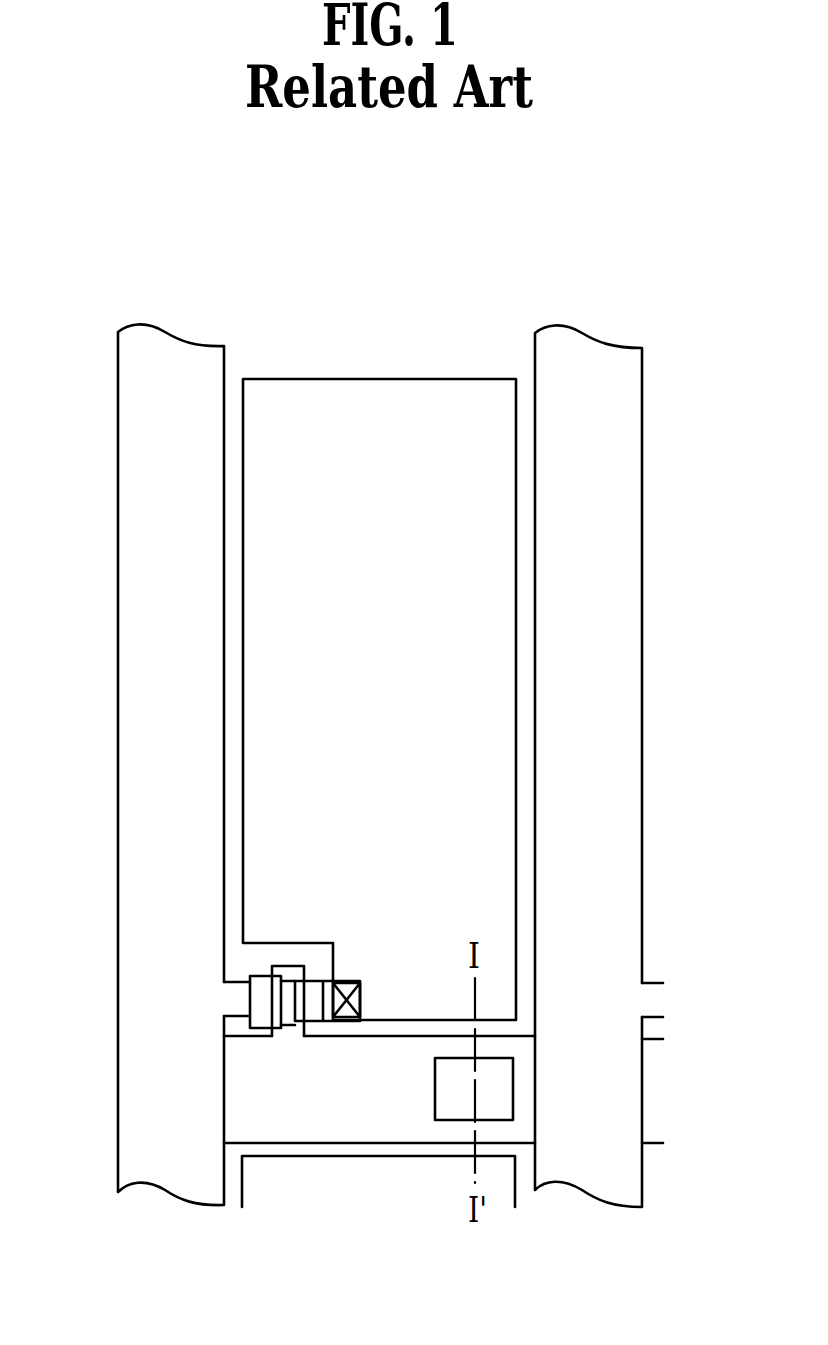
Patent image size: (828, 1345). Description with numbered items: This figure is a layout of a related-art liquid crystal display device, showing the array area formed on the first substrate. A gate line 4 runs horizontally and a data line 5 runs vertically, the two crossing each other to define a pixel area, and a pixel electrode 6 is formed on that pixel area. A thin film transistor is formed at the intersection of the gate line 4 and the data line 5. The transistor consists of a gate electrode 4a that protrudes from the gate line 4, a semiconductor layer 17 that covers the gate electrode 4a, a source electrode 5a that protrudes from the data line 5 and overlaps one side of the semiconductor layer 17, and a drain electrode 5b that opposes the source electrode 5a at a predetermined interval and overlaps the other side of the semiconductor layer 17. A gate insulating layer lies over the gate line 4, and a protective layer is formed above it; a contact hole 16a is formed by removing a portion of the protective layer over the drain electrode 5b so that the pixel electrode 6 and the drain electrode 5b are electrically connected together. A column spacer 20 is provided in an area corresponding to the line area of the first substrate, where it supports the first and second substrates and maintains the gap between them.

The gate line 4 is at (342, 1123).
The gate electrode 4a is at (290, 966).
The data line 5 is at (580, 1168).
The source electrode 5a is at (238, 980).
The drain electrode 5b is at (330, 988).
The pixel electrode 6 is at (480, 773).
The contact hole 16a is at (350, 988).
The semiconductor layer 17 is at (290, 1030).
The column spacer 20 is at (443, 1087).